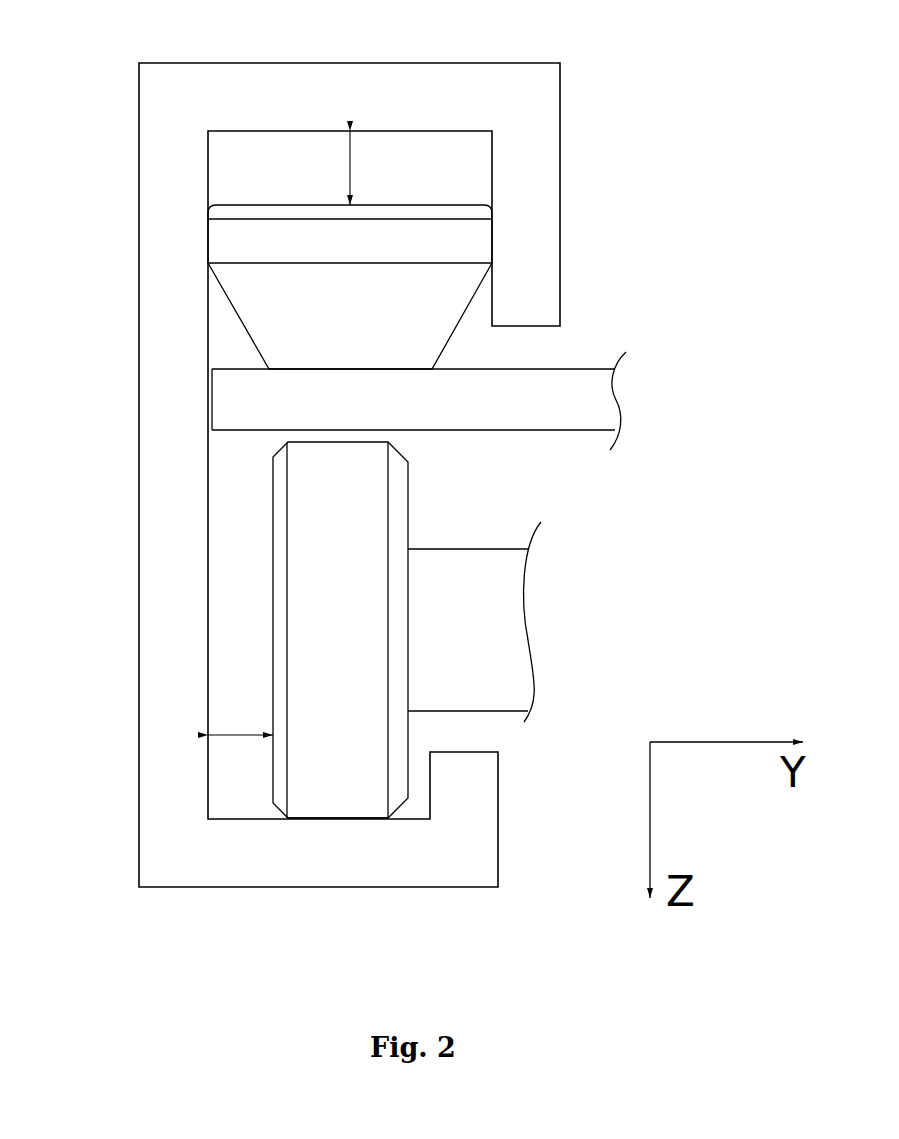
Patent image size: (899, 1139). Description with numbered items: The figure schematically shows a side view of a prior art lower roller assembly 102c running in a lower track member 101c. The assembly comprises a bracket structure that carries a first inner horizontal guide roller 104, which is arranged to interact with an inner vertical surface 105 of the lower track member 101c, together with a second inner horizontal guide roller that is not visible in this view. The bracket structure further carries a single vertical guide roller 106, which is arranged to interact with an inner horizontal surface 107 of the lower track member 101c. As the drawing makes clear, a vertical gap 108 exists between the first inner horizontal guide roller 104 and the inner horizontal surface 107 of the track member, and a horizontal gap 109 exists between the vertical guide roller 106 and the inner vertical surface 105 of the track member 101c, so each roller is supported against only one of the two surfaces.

The lower track member 101c is at (139, 113).
The lower roller assembly 102c is at (684, 112).
The first inner horizontal guide roller 104 is at (243, 241).
The inner vertical surface 105 is at (208, 323).
The vertical guide roller 106 is at (272, 632).
The inner horizontal surface 107 is at (335, 820).
The vertical gap 108 is at (347, 178).
The horizontal gap 109 is at (235, 737).